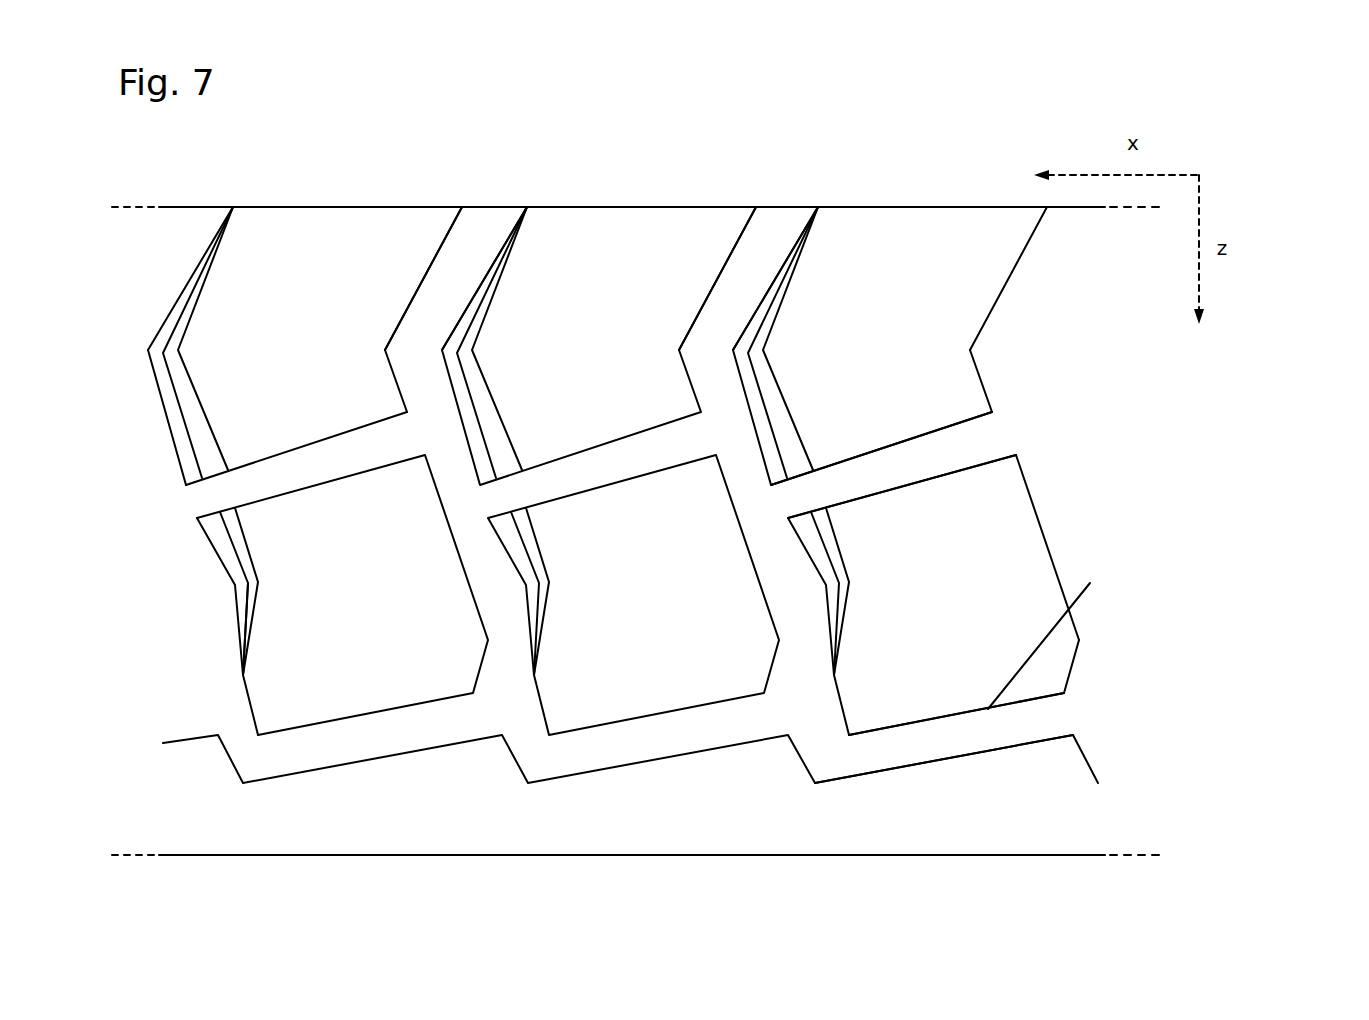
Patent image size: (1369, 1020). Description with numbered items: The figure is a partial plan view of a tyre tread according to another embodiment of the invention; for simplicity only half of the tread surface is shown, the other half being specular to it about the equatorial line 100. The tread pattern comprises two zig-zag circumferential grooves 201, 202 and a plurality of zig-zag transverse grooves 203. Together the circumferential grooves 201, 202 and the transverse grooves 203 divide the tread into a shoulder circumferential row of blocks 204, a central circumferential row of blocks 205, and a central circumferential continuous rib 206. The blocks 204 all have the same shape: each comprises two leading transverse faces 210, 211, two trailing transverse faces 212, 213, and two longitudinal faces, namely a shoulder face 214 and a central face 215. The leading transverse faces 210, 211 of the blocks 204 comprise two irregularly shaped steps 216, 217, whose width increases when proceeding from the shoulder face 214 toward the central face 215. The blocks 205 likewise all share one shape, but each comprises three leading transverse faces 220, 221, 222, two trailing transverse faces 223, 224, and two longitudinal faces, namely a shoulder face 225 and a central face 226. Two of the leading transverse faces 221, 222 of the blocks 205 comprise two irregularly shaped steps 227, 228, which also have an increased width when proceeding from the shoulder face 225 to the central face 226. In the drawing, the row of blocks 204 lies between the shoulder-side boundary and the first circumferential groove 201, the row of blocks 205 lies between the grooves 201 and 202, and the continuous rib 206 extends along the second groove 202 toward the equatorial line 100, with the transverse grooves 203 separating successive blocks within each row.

The equatorial line 100 is at (1185, 848).
The zig-zag circumferential groove 201 is at (993, 438).
The zig-zag circumferential groove 202 is at (1042, 720).
The zig-zag transverse groove 203 is at (478, 232).
The shoulder circumferential row of blocks 204 is at (577, 368).
The central circumferential row of blocks 205 is at (633, 595).
The central circumferential continuous rib 206 is at (637, 795).
The leading transverse face 210 is at (172, 438).
The leading transverse face 211 is at (188, 280).
The trailing transverse face 212 is at (980, 373).
The trailing transverse face 213 is at (1018, 262).
The shoulder face 214 is at (368, 206).
The central face 215 is at (290, 452).
The irregularly shaped step 216 is at (163, 335).
The irregularly shaped step 217 is at (188, 400).
The leading transverse face 220 is at (248, 703).
The leading transverse face 221 is at (237, 638).
The leading transverse face 222 is at (212, 545).
The trailing transverse face 223 is at (1073, 662).
The trailing transverse face 224 is at (1043, 527).
The shoulder face 225 is at (932, 478).
The central face 226 is at (992, 652).
The irregularly shaped step 227 is at (240, 550).
The irregularly shaped step 228 is at (243, 598).